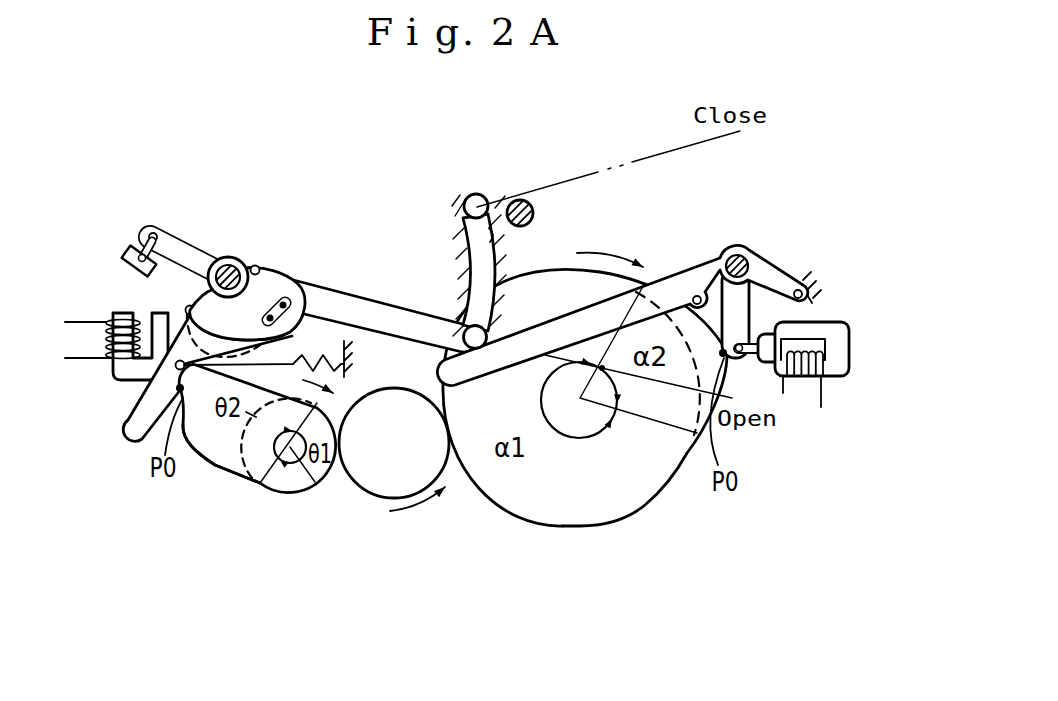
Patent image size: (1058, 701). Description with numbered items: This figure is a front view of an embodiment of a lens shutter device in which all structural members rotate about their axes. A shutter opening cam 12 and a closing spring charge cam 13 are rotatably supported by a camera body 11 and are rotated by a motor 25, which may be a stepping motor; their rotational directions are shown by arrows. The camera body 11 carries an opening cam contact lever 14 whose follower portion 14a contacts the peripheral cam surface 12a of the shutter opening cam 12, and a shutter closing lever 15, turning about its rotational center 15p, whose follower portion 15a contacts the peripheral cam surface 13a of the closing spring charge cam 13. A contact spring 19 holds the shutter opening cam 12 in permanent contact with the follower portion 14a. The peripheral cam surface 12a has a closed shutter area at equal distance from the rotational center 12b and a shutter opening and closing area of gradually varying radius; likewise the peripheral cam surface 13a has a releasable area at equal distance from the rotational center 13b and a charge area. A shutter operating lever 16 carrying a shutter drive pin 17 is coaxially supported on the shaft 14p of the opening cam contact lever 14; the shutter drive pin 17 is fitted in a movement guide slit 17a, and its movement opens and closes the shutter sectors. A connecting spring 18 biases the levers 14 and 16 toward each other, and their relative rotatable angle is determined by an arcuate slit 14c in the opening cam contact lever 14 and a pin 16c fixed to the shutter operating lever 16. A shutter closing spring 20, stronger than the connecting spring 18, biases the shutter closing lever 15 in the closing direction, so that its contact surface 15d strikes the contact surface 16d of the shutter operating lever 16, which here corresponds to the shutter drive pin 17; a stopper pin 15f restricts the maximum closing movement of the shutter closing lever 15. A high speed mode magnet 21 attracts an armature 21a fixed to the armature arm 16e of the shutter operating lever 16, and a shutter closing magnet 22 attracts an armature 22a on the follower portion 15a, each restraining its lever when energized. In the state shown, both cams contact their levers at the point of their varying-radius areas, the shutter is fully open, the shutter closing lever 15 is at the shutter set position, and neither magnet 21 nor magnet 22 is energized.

The camera body 11 is at (352, 362).
The shutter opening cam 12 is at (204, 452).
The peripheral cam surface 12a is at (232, 475).
The rotational center 12b is at (311, 483).
The closing spring charge cam 13 is at (538, 518).
The peripheral cam surface 13a is at (648, 505).
The rotational center 13b is at (580, 400).
The opening cam contact lever 14 is at (189, 393).
The follower portion 14a is at (135, 436).
The arcuate slit 14c is at (187, 308).
The shaft 14p is at (233, 258).
The shutter closing lever 15 is at (622, 299).
The follower portion 15a is at (745, 317).
The contact surface 15d is at (583, 322).
The stopper pin 15f is at (532, 200).
The rotational center 15p is at (745, 252).
The shutter operating lever 16 is at (383, 310).
The pin 16c is at (295, 302).
The contact surface 16d is at (457, 310).
The armature arm 16e is at (183, 243).
The shutter drive pin 17 is at (435, 224).
The movement guide slit 17a is at (506, 200).
The connecting spring 18 is at (260, 266).
The contact spring 19 is at (322, 340).
The shutter closing spring 20 is at (710, 262).
The high speed mode magnet 21 is at (118, 372).
The armature 21a is at (125, 254).
The shutter closing magnet 22 is at (840, 364).
The armature 22a is at (773, 362).
The motor 25 is at (375, 498).